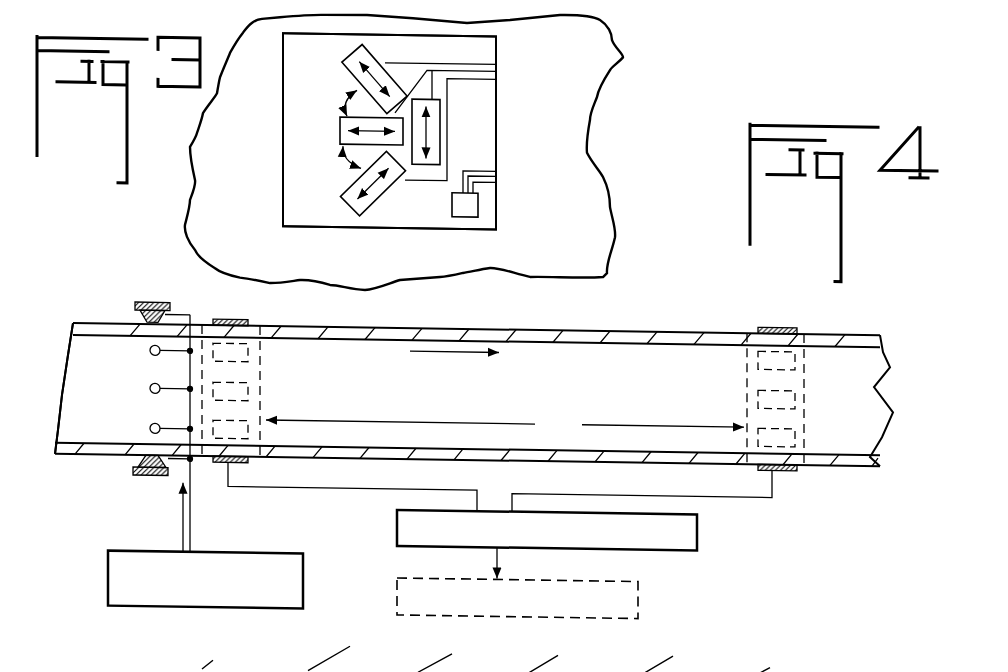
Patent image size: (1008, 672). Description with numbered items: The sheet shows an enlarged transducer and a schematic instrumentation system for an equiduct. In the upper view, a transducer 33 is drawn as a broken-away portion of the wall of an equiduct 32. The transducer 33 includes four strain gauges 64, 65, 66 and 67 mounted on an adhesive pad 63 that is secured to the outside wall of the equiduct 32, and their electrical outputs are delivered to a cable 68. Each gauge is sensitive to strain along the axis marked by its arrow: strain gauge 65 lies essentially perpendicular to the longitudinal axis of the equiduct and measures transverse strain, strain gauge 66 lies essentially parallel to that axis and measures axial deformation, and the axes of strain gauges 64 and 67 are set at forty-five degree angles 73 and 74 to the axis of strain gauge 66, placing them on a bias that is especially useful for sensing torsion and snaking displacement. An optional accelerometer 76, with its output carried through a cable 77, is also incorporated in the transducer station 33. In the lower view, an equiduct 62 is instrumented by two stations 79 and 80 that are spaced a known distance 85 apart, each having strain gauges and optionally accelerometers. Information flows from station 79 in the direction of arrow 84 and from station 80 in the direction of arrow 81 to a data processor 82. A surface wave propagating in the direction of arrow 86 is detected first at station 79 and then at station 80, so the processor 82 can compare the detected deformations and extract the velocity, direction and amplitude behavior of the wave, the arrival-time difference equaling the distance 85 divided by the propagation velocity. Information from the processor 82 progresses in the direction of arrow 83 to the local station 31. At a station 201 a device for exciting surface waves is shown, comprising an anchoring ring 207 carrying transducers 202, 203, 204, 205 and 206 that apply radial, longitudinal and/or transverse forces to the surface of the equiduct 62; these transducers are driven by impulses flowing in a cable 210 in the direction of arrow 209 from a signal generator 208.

In FIG. 4, the local station 31 is at (641, 592).
In FIG. 3, the equiduct 32 is at (616, 63).
In FIG. 3, the transducer 33 is at (499, 231).
In FIG. 4, the equiduct 62 is at (468, 327).
In FIG. 3, the adhesive pad 63 is at (497, 43).
In FIG. 3, the strain gauge 64 is at (345, 62).
In FIG. 3, the strain gauge 65 is at (441, 127).
In FIG. 3, the strain gauge 66 is at (340, 131).
In FIG. 3, the strain gauge 67 is at (398, 176).
In FIG. 3, the cable 68 is at (500, 58).
In FIG. 3, the angle 73 is at (336, 104).
In FIG. 3, the angle 74 is at (339, 167).
In FIG. 3, the accelerometer 76 is at (480, 209).
In FIG. 3, the cable 77 is at (500, 165).
In FIG. 4, the station 79 is at (259, 321).
In FIG. 4, the station 80 is at (789, 320).
In FIG. 4, the arrow 81 is at (583, 482).
In FIG. 4, the data processor 82 is at (698, 534).
In FIG. 4, the arrow 83 is at (500, 557).
In FIG. 4, the arrow 84 is at (381, 479).
In FIG. 4, the distance 85 is at (505, 426).
In FIG. 4, the arrow 86 is at (454, 366).
In FIG. 4, the station 201 is at (100, 531).
In FIG. 4, the transducer 202 is at (141, 309).
In FIG. 4, the transducer 203 is at (149, 354).
In FIG. 4, the transducer 204 is at (149, 392).
In FIG. 4, the transducer 205 is at (149, 432).
In FIG. 4, the transducer 206 is at (148, 480).
In FIG. 4, the anchoring ring 207 is at (134, 474).
In FIG. 4, the signal generator 208 is at (304, 586).
In FIG. 4, the arrow 209 is at (158, 517).
In FIG. 4, the cable 210 is at (192, 530).